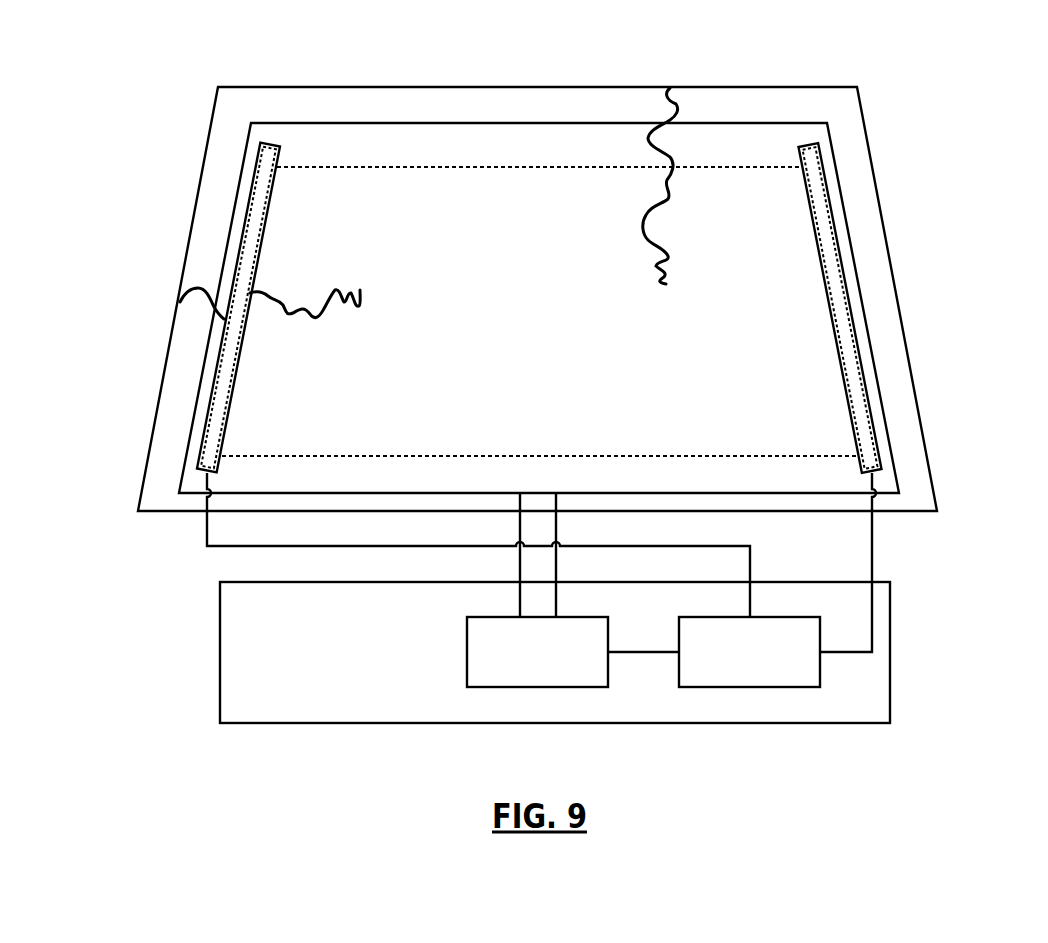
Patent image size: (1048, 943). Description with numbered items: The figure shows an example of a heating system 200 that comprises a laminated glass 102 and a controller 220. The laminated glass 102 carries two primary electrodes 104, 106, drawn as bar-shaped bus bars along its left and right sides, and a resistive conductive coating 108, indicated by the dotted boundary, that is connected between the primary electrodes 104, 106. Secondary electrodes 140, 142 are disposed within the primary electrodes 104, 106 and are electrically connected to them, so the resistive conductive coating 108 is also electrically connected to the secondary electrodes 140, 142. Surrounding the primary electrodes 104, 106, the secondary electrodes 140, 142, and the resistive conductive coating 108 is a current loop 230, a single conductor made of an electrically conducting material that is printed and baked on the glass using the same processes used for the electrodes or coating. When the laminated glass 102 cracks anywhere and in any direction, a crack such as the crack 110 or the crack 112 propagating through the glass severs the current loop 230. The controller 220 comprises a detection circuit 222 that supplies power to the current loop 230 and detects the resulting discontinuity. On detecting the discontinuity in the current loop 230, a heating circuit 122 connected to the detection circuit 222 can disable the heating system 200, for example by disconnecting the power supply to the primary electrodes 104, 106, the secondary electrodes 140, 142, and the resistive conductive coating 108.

The heating system 200 is at (613, 49).
The laminated glass 102 is at (778, 87).
The current loop 230 is at (857, 272).
The resistive conductive coating 108 is at (325, 167).
The primary electrode 104 is at (240, 242).
The secondary electrode 140 is at (257, 207).
The primary electrode 106 is at (873, 427).
The secondary electrode 142 is at (847, 342).
The crack 110 is at (227, 322).
The crack 112 is at (673, 112).
The controller 220 is at (218, 650).
The detection circuit 222 is at (467, 652).
The heating circuit 122 is at (760, 617).